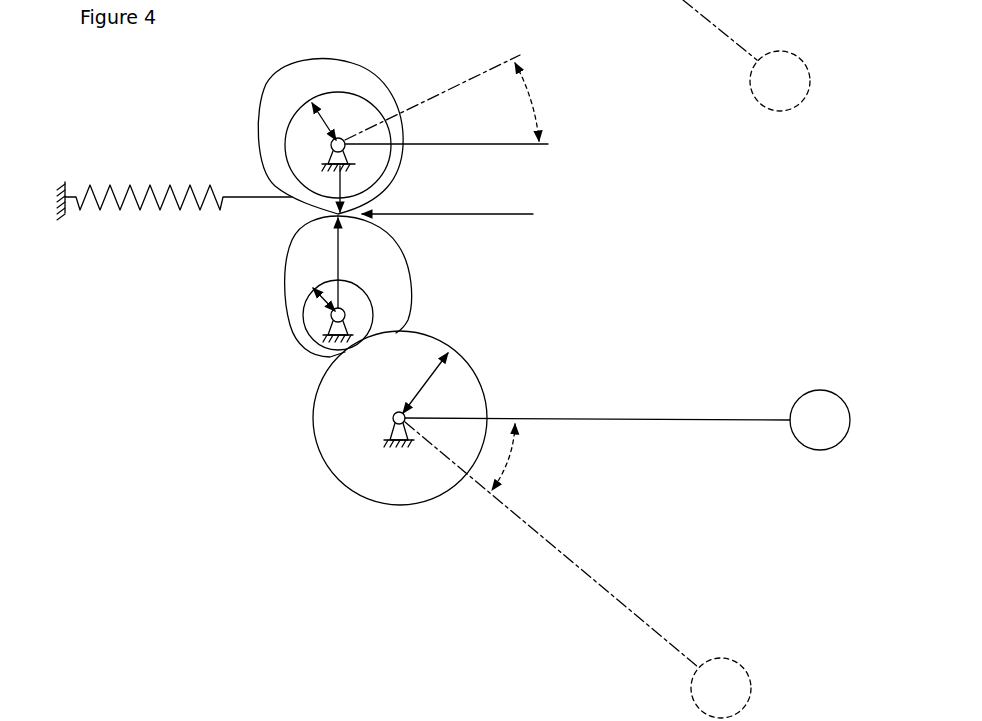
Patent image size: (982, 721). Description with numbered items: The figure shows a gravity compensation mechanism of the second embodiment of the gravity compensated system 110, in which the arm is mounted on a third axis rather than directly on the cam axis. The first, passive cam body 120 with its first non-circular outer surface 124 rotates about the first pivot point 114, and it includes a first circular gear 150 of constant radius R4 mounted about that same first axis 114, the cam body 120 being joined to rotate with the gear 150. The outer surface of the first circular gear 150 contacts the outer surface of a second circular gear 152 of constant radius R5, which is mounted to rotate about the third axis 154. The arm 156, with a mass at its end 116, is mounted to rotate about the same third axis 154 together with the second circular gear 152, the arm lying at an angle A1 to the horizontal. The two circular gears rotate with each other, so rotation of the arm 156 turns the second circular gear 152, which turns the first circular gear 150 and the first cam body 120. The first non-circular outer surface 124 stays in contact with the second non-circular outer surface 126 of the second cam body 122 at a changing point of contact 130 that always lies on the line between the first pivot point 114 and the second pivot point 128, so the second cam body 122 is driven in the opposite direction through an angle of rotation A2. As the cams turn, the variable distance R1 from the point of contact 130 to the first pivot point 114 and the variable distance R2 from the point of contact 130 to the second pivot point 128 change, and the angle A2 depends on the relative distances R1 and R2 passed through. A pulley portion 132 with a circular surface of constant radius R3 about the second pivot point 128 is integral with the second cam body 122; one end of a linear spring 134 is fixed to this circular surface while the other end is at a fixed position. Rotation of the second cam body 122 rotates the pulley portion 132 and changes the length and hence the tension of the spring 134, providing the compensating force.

The gravity compensated system 110 is at (630, 131).
The pivot point 114 is at (327, 322).
The end 116 is at (837, 392).
The first cam body 120 is at (302, 265).
The second cam body 122 is at (283, 82).
The first non-circular outer surface 124 is at (308, 352).
The second non-circular outer surface 126 is at (340, 65).
The second pivot point 128 is at (348, 141).
The point of contact 130 is at (472, 211).
The pulley portion 132 is at (292, 118).
The spring 134 is at (108, 213).
The first circular gear 150 is at (358, 307).
The second circular gear 152 is at (368, 477).
The third axis 154 is at (393, 424).
The arm 156 is at (600, 418).
The variable distance R1 is at (339, 262).
The variable distance R2 is at (341, 183).
The constant radius R3 is at (323, 118).
The constant radius R4 is at (322, 303).
The constant radius R5 is at (430, 377).
The angle A1 is at (500, 457).
The angle of rotation A2 is at (519, 102).